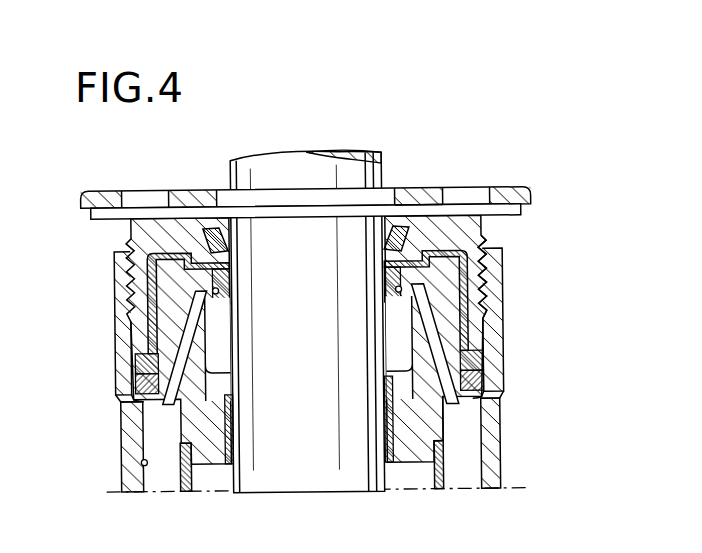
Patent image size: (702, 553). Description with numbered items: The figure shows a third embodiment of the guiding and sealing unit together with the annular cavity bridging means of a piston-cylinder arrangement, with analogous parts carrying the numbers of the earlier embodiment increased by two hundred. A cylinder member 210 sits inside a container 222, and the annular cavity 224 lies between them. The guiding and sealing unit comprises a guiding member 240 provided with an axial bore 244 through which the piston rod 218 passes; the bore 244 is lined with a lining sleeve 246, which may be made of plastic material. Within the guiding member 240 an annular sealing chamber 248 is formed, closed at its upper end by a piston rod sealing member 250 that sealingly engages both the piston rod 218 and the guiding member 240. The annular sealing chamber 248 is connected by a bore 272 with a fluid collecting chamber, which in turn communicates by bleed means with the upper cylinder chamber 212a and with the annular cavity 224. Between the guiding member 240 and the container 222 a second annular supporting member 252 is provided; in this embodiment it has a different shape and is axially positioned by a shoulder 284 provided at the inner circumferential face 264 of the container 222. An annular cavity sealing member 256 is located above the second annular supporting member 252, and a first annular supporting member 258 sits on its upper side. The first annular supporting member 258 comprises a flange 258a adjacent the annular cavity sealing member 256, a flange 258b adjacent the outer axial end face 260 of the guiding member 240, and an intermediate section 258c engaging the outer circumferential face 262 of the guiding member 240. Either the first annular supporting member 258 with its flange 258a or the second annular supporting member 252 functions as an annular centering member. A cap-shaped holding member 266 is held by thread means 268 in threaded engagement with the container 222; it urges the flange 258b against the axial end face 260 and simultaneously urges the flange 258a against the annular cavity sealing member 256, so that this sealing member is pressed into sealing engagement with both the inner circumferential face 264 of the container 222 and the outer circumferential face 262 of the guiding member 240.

The cylinder member 210 is at (433, 477).
The upper cylinder chamber 212a is at (400, 478).
The piston rod 218 is at (280, 473).
The container 222 is at (493, 437).
The annular cavity 224 is at (467, 473).
The guiding member 240 is at (478, 333).
The axial bore 244 is at (387, 370).
The lining sleeve 246 is at (387, 445).
The annular sealing chamber 248 is at (222, 363).
The piston rod sealing member 250 is at (220, 273).
The second annular supporting member 252 is at (497, 405).
The annular cavity sealing member 256 is at (483, 378).
The first annular supporting member 258 is at (495, 293).
The second flange 258a is at (485, 357).
The first flange 258b is at (435, 220).
The intermediate section 258c is at (490, 267).
The outer axial end face 260 is at (130, 243).
The outer circumferential face 262 is at (152, 332).
The inner circumferential face 264 is at (130, 470).
The holding member 266 is at (488, 227).
The thread means 268 is at (125, 278).
The bore 272 is at (197, 320).
The shoulder 284 is at (130, 402).